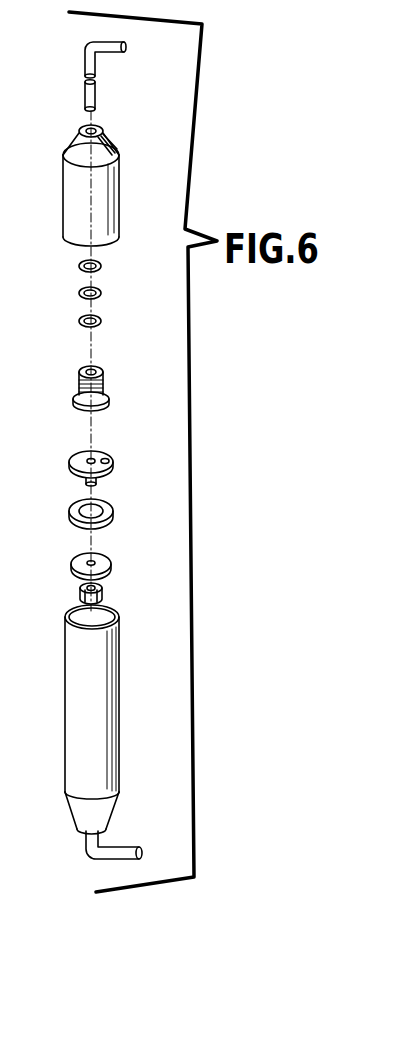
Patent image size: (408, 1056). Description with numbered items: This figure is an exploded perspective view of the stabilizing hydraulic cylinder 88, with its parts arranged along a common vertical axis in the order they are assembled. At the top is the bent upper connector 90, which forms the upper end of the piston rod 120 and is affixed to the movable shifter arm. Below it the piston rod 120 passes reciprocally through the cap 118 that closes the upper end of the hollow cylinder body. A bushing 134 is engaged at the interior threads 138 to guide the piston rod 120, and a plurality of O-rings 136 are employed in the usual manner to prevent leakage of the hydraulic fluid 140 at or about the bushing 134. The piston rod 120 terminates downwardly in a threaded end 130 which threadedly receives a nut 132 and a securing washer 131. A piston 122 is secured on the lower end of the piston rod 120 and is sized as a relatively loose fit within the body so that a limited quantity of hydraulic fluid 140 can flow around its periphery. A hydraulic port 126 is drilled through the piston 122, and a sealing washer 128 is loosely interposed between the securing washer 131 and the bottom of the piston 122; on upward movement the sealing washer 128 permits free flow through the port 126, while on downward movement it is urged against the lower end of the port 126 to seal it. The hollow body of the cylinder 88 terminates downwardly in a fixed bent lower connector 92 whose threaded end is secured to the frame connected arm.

The hydraulic cylinder 88 is at (120, 766).
The bent upper connector 90 is at (97, 62).
The bent lower connector 92 is at (108, 856).
The cap 118 is at (112, 182).
The piston rod 120 is at (98, 88).
The piston 122 is at (100, 472).
The hydraulic port 126 is at (108, 459).
The sealing washer 128 is at (112, 512).
The threaded end 130 is at (87, 113).
The securing washer 131 is at (108, 565).
The nut 132 is at (104, 593).
The bushing 134 is at (104, 389).
The O-rings 136 is at (103, 270).
The interior threads 138 is at (105, 386).
The hydraulic fluid 140 is at (100, 625).